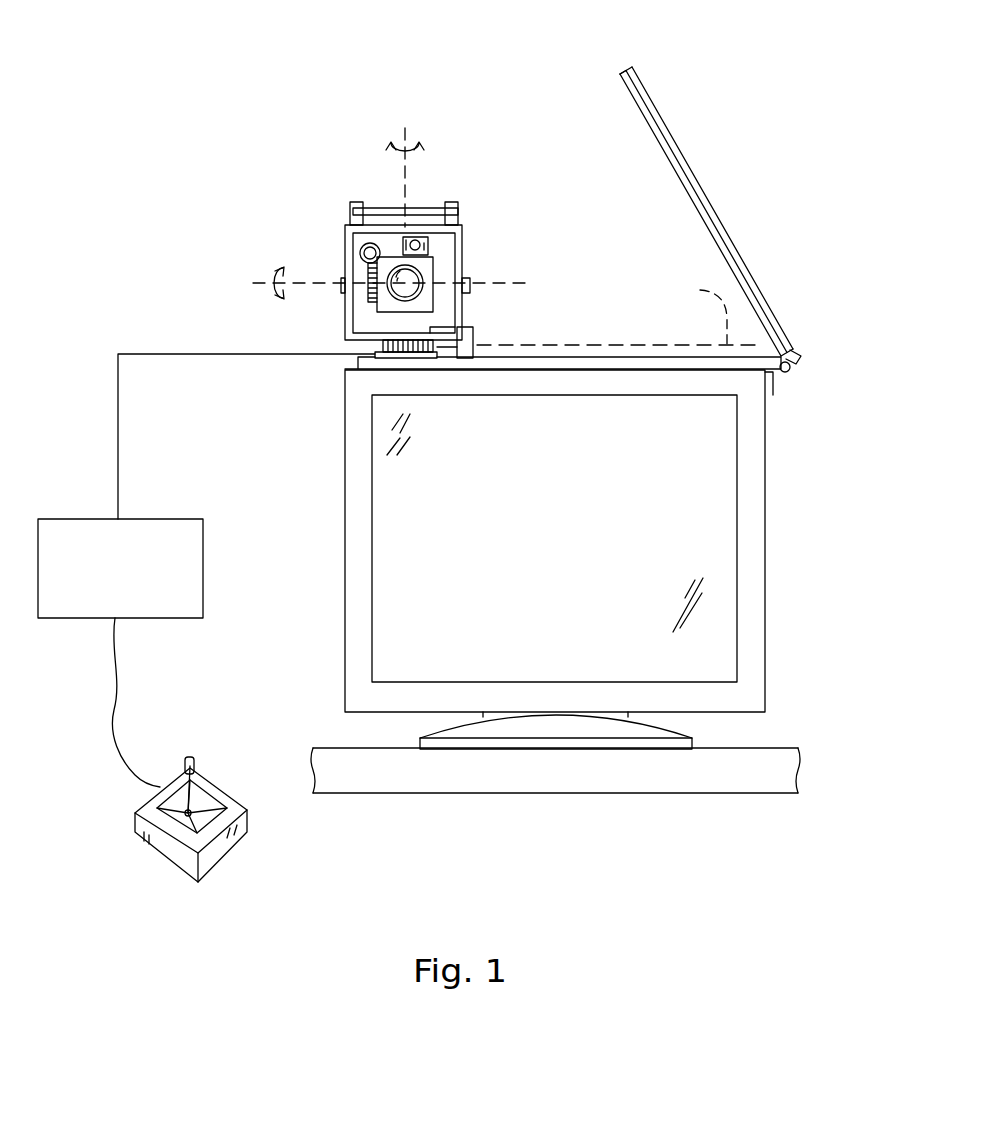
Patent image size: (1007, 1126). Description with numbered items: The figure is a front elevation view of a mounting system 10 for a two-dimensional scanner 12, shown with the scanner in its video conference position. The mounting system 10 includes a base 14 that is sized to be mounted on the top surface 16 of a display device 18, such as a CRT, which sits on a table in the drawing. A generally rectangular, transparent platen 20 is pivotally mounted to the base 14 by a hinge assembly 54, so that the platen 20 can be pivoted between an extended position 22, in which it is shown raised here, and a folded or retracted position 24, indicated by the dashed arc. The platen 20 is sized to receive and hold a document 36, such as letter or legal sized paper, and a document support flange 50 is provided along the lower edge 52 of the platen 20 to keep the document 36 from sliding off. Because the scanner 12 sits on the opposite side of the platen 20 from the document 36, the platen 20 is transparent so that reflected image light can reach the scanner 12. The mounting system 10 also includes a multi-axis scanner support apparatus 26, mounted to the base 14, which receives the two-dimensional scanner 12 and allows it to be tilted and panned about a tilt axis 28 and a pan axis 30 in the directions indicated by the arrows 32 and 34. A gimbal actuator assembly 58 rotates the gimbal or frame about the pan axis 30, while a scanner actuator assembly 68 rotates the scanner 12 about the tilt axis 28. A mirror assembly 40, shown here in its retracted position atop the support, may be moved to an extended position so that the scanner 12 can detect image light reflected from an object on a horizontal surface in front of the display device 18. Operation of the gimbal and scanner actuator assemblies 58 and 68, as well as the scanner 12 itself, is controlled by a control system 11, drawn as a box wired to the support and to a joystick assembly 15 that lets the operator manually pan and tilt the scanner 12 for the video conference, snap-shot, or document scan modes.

The mounting system 10 is at (198, 98).
The control system 11 is at (207, 578).
The two-dimensional scanner 12 is at (440, 265).
The base 14 is at (773, 395).
The joystick assembly 15 is at (170, 866).
The top surface 16 is at (702, 370).
The display device 18 is at (342, 469).
The platen 20 is at (611, 68).
The extended position 22 is at (620, 84).
The retracted position 24 is at (690, 310).
The multi-axis scanner support apparatus 26 is at (344, 225).
The tilt axis 28 is at (522, 283).
The pan axis 30 is at (405, 178).
The arrow 32 is at (278, 297).
The arrow 34 is at (393, 160).
The document 36 is at (703, 197).
The mirror assembly 40 is at (428, 207).
The document support flange 50 is at (792, 360).
The lower edge 52 is at (792, 345).
The hinge assembly 54 is at (792, 370).
The gimbal actuator assembly 58 is at (473, 340).
The scanner actuator assembly 68 is at (357, 252).